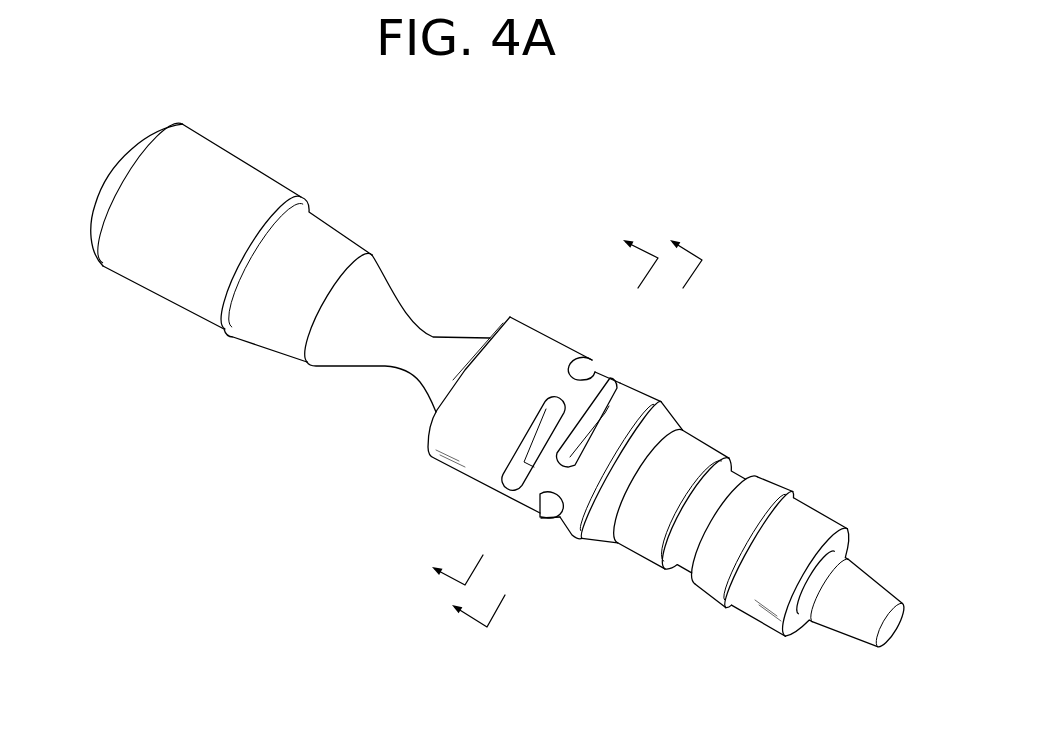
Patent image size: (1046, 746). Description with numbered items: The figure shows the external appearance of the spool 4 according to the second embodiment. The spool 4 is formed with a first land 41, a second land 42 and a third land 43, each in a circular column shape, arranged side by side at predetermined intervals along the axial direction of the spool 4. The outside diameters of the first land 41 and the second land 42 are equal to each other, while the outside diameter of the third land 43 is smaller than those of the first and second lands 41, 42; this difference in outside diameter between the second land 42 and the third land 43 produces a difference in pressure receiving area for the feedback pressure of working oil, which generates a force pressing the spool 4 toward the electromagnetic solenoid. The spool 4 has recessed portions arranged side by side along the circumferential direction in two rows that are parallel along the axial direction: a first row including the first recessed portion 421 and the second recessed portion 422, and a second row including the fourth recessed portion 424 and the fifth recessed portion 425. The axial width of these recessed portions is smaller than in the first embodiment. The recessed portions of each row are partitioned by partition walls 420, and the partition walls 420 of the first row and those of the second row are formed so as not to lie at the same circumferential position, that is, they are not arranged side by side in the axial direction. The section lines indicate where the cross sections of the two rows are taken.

The spool 4 is at (258, 384).
The first land 41 is at (223, 160).
The second land 42 is at (450, 440).
The partition wall 420 is at (563, 385).
The first recessed portion 421 is at (630, 390).
The second recessed portion 422 is at (553, 534).
The fourth recessed portion 424 is at (505, 470).
The fifth recessed portion 425 is at (596, 370).
The third land 43 is at (766, 482).